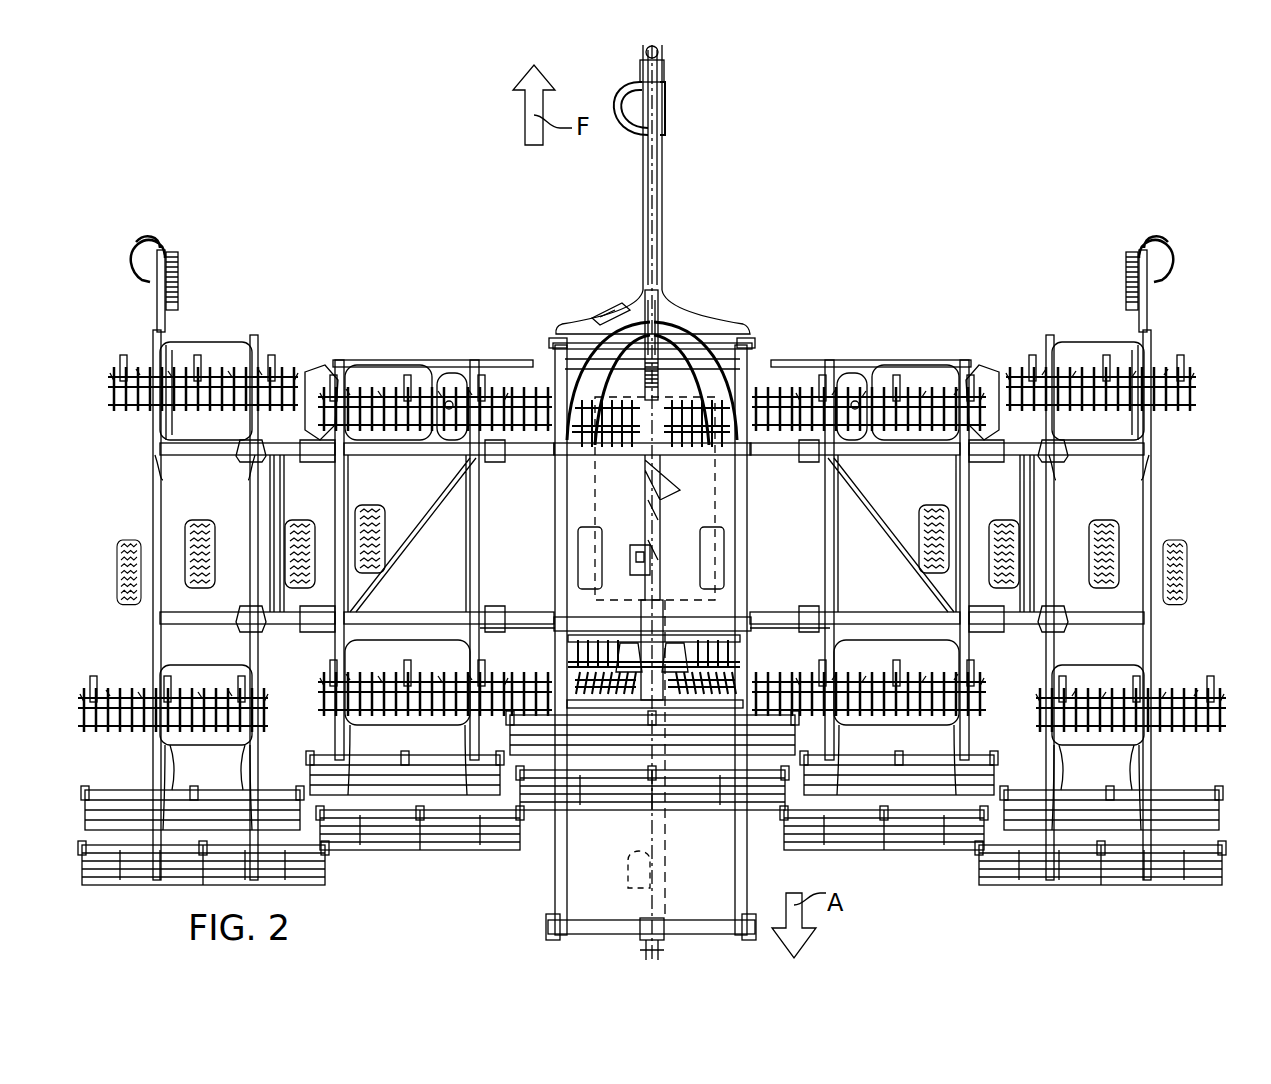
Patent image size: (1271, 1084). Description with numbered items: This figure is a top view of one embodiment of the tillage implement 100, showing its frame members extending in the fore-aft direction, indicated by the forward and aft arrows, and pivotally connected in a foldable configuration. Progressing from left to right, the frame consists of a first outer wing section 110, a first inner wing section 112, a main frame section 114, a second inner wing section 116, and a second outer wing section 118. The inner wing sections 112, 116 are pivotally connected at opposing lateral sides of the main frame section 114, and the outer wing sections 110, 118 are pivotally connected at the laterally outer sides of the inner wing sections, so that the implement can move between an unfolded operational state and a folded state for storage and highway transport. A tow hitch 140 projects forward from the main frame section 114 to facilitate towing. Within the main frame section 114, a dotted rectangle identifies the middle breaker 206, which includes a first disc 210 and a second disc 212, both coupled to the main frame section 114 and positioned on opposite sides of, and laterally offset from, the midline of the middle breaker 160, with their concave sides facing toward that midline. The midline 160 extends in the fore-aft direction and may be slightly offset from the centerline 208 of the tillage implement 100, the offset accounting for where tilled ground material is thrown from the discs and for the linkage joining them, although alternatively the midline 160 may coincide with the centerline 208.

The tillage implement 100 is at (962, 106).
The first outer wing section 110 is at (220, 260).
The first inner wing section 112 is at (381, 290).
The main frame section 114 is at (682, 266).
The second inner wing section 116 is at (903, 286).
The second outer wing section 118 is at (1087, 256).
The tow hitch 140 is at (688, 80).
The midline of the middle breaker 160 is at (630, 865).
The middle breaker 206 is at (688, 392).
The centerline of the tillage implement 208 is at (665, 845).
The first disc 210 is at (684, 489).
The second disc 212 is at (630, 560).